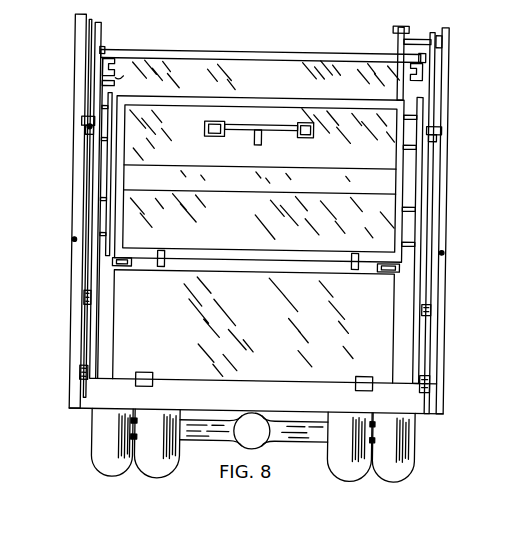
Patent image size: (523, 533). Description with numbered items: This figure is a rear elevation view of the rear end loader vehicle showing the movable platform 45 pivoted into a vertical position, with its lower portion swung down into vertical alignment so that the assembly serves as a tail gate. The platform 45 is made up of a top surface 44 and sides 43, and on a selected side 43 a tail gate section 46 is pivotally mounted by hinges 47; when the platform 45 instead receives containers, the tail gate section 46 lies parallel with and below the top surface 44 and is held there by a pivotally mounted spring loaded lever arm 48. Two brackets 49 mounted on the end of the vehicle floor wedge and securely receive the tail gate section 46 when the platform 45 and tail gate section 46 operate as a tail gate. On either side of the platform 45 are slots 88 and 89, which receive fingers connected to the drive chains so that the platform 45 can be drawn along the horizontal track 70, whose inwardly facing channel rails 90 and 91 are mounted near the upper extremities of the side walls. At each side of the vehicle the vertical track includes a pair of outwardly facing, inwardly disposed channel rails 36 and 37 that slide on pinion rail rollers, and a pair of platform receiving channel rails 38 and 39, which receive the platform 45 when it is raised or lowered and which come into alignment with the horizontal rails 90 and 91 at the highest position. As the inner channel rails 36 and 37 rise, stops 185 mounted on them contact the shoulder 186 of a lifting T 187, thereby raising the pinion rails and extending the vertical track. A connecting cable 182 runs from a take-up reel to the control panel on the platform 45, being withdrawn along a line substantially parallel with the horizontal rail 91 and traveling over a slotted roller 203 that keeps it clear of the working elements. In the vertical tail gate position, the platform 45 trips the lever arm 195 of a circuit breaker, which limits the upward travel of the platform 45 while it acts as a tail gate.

The inwardly disposed channel rail 36 is at (100, 76).
The inwardly disposed channel rail 37 is at (432, 116).
The platform receiving channel rail 38 is at (104, 101).
The platform receiving channel rail 39 is at (420, 106).
The side 43 is at (258, 89).
The top surface 44 is at (247, 234).
The platform 45 is at (307, 94).
The tail gate section 46 is at (257, 311).
The hinge 47 is at (161, 268).
The spring loaded lever arm 48 is at (283, 133).
The bracket 49 is at (157, 365).
The horizontal track 70 is at (121, 65).
The slot 88 is at (124, 268).
The slot 89 is at (393, 273).
The channel rail 90 is at (132, 76).
The channel rail 91 is at (407, 78).
The connecting cable 182 is at (395, 28).
The stop 185 is at (89, 140).
The shoulder 186 is at (80, 123).
The lifting T 187 is at (67, 136).
The lever arm 195 is at (112, 88).
The slotted roller 203 is at (392, 40).